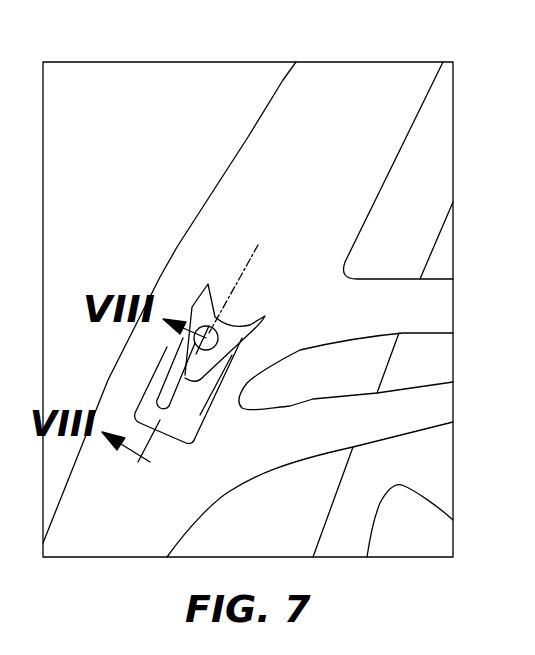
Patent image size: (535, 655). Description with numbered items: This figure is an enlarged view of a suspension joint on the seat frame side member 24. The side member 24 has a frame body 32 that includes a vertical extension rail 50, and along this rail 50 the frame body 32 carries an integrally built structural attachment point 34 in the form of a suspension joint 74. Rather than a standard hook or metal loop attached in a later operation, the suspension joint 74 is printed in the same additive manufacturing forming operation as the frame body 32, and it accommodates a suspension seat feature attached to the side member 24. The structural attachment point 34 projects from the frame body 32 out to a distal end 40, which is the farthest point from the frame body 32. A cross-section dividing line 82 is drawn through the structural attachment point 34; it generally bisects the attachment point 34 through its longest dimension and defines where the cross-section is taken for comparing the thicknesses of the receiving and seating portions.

The seat frame side member 24 is at (413, 62).
The frame body 32 is at (328, 91).
The structural attachment point 34 is at (205, 284).
The distal end 40 is at (162, 358).
The vertical extension rail 50 is at (259, 156).
The suspension joint 74 is at (196, 316).
The cross-section dividing line 82 is at (246, 262).